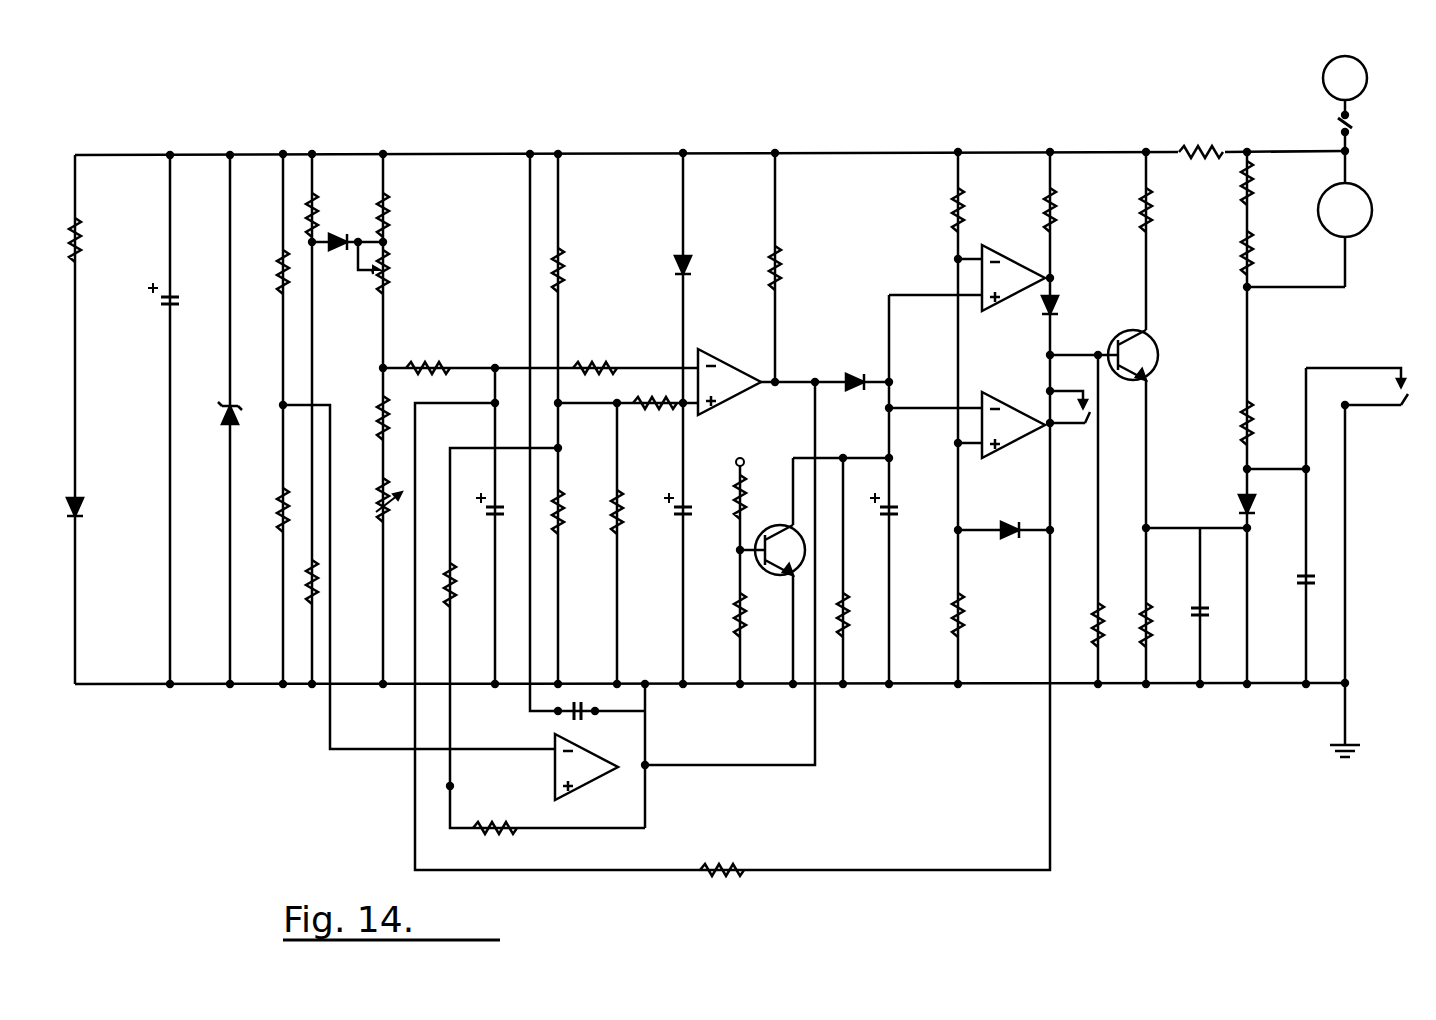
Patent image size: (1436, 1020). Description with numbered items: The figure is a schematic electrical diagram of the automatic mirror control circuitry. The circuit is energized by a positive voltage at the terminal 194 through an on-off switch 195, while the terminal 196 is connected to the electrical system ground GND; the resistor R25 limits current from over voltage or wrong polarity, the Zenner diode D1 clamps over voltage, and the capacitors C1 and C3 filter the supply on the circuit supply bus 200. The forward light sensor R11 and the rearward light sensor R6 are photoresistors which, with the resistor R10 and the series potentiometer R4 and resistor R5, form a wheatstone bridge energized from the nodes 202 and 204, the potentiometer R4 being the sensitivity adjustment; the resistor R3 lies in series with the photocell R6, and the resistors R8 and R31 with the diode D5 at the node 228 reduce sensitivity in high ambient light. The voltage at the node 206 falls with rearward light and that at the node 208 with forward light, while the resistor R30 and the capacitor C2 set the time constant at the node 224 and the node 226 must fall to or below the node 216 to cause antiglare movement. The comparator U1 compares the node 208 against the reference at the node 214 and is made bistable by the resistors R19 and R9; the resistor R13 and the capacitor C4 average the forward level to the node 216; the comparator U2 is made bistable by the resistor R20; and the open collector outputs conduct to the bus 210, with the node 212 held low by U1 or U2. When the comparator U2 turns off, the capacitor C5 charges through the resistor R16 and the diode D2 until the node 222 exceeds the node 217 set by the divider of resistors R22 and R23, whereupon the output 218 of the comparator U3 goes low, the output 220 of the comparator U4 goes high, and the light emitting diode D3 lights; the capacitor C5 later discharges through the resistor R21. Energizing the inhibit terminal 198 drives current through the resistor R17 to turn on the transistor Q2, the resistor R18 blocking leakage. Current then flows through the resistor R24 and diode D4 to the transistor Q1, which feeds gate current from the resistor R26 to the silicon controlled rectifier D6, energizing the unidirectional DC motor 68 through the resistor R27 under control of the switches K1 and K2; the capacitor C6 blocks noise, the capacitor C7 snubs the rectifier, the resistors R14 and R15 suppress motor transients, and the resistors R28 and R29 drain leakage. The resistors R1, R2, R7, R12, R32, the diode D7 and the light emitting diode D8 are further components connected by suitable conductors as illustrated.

The terminal 194 is at (1360, 62).
The on-off switch 195 is at (1358, 128).
The unidirectional DC motor 68 is at (1364, 192).
The node 202 is at (555, 152).
The circuit supply bus 200 is at (690, 134).
The node 228 is at (385, 244).
The node 206 is at (380, 368).
The node 224 is at (493, 365).
The node 226 is at (680, 366).
The node 214 is at (280, 405).
The node 208 is at (561, 447).
The node 216 is at (680, 406).
The node 212 is at (778, 380).
The node 222 is at (908, 374).
The node 217 is at (955, 259).
The output 220 is at (1053, 277).
The output 218 is at (1045, 425).
The terminal 198 is at (742, 458).
The terminal 196 is at (1349, 682).
The bus 210 is at (283, 688).
The node 204 is at (383, 688).
The switch K1 is at (1075, 445).
The switch K2 is at (1393, 425).
The ground GND is at (1341, 772).
The resistor R1 is at (280, 265).
The resistor R2 is at (280, 500).
The resistor R3 is at (380, 425).
The potentiometer R4 is at (383, 268).
The resistor R5 is at (386, 218).
The rearward light sensor R6 is at (376, 506).
The resistor R7 is at (588, 366).
The resistor R8 is at (315, 210).
The resistor R9 is at (447, 575).
The resistor R10 is at (561, 270).
The forward light sensor R11 is at (561, 505).
The resistor R12 is at (620, 505).
The resistor R13 is at (650, 400).
The resistor R14 is at (1250, 188).
The resistor R15 is at (1250, 258).
The resistor R16 is at (778, 268).
The resistor R17 is at (743, 500).
The resistor R18 is at (737, 615).
The resistor R19 is at (510, 833).
The resistor R20 is at (728, 866).
The resistor R21 is at (846, 615).
The resistor R22 is at (961, 205).
The resistor R23 is at (961, 618).
The resistor R24 is at (1053, 205).
The resistor R25 is at (1203, 145).
The resistor R26 is at (1149, 215).
The resistor R27 is at (1244, 420).
The resistor R28 is at (1149, 615).
The resistor R29 is at (1101, 615).
The resistor R30 is at (418, 366).
The resistor R31 is at (309, 588).
The resistor R32 is at (78, 222).
The capacitor C1 is at (175, 298).
The capacitor C2 is at (500, 508).
The capacitor C3 is at (578, 700).
The capacitor C4 is at (680, 512).
The capacitor C5 is at (895, 512).
The capacitor C6 is at (1205, 612).
The capacitor C7 is at (1312, 580).
The Zenner diode D1 is at (222, 410).
The diode D2 is at (872, 360).
The light emitting diode D3 is at (1022, 496).
The diode D4 is at (1058, 308).
The diode D5 is at (345, 250).
The silicon controlled rectifier D6 is at (1252, 505).
The diode D7 is at (688, 268).
The light emitting diode D8 is at (118, 490).
The comparator U1 is at (585, 790).
The comparator U2 is at (720, 365).
The comparator U3 is at (1005, 408).
The comparator U4 is at (1010, 262).
The transistor Q1 is at (1128, 330).
The transistor Q2 is at (777, 575).